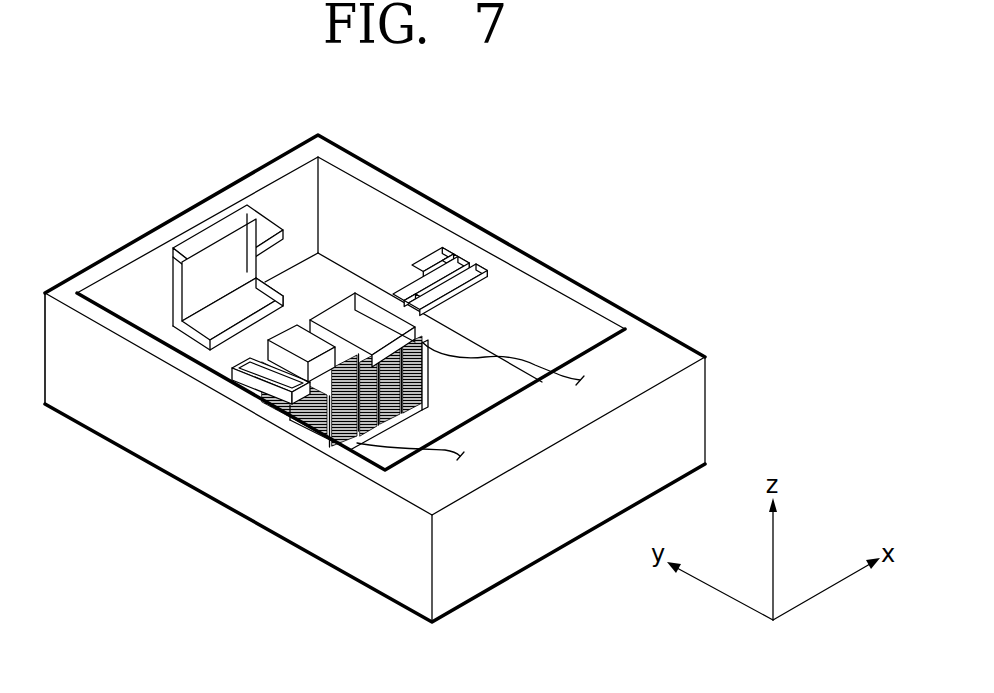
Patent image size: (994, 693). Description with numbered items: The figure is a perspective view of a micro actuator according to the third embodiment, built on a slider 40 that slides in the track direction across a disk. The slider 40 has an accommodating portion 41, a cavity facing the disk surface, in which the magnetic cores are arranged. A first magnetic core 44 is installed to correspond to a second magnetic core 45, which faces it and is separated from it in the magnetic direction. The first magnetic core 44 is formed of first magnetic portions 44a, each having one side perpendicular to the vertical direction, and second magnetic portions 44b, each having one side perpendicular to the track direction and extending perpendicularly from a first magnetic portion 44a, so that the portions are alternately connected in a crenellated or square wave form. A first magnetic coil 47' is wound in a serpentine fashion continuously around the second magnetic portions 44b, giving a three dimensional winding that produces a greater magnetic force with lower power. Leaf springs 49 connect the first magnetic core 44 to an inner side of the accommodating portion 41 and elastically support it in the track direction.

The slider 40 is at (545, 263).
The accommodating portion 41 is at (608, 327).
The first magnetic core 44 is at (327, 287).
The first magnetic portions 44a is at (417, 420).
The second magnetic portions 44b is at (367, 437).
The second magnetic core 45 is at (228, 228).
The first magnetic coil 47' is at (234, 438).
The leaf springs 49 is at (450, 248).